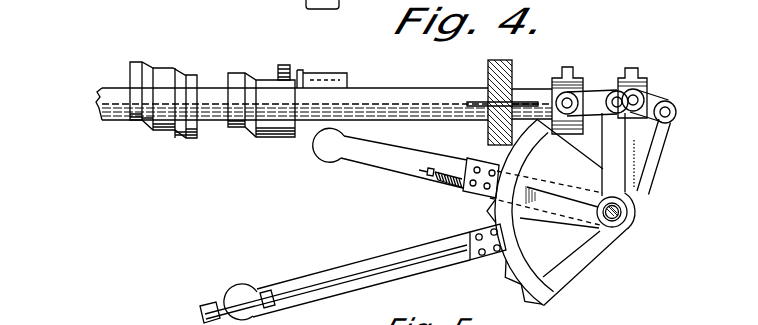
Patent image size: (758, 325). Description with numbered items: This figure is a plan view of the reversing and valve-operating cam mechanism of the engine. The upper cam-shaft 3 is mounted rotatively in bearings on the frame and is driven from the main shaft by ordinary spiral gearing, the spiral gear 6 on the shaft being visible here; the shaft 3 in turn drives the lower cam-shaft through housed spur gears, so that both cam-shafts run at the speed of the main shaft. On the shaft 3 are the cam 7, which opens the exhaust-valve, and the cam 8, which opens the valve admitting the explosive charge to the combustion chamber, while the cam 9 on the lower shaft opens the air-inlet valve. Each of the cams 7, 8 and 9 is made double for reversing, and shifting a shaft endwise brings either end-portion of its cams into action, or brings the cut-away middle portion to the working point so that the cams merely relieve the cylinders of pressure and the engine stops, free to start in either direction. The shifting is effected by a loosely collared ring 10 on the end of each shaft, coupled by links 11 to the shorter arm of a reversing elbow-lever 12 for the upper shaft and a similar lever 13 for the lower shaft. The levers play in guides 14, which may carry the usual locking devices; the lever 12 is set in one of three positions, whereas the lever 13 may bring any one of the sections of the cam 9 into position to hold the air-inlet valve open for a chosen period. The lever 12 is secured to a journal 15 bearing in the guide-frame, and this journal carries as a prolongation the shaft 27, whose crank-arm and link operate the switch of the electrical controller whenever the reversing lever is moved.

The upper cam-shaft 3 is at (417, 88).
The spiral gear 6 is at (512, 75).
The exhaust-valve cam 7 is at (172, 46).
The charge-admission cam 8 is at (257, 140).
The air-inlet valve cam 9 is at (310, 68).
The loosely collared ring 10 is at (577, 85).
The links 11 is at (581, 97).
The reversing elbow-lever 12 is at (347, 268).
The speed-regulating lever 13 is at (436, 157).
The guides 14 is at (537, 303).
The journal 15 is at (622, 228).
The shaft 27 is at (619, 210).